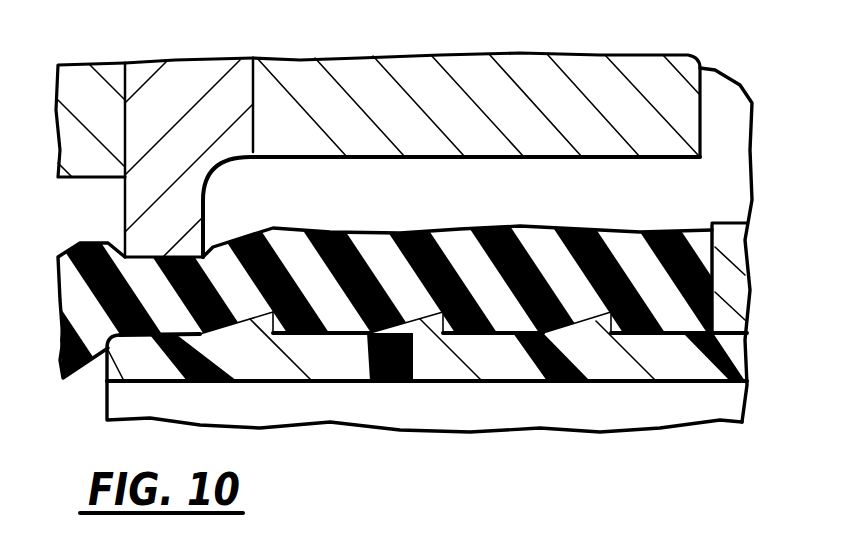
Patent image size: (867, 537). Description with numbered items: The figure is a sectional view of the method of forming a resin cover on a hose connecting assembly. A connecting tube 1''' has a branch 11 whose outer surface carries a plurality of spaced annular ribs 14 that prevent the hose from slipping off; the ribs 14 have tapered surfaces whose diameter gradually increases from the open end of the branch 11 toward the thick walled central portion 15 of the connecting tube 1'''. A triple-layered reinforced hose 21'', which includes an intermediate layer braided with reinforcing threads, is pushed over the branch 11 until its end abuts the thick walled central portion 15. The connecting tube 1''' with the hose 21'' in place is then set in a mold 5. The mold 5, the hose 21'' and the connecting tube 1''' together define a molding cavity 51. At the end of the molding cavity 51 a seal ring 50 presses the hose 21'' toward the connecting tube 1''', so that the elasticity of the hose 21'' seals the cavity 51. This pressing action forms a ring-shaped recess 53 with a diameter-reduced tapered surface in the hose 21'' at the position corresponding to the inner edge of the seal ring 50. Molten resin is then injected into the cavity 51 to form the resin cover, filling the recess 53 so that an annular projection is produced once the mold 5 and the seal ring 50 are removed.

The mold 5 is at (500, 64).
The seal ring 50 is at (180, 88).
The molding cavity 51 is at (536, 196).
The ring-shaped recess 53 is at (213, 247).
The connecting tube 1''' is at (394, 305).
The thick walled central portion 15 is at (727, 332).
The hose 21'' is at (359, 390).
The annular rib 14 is at (602, 322).
The branch 11 is at (320, 372).